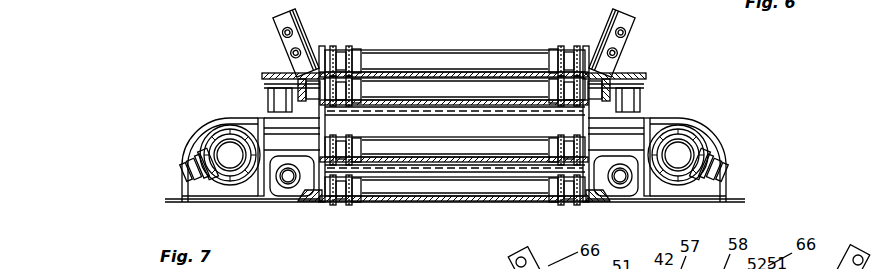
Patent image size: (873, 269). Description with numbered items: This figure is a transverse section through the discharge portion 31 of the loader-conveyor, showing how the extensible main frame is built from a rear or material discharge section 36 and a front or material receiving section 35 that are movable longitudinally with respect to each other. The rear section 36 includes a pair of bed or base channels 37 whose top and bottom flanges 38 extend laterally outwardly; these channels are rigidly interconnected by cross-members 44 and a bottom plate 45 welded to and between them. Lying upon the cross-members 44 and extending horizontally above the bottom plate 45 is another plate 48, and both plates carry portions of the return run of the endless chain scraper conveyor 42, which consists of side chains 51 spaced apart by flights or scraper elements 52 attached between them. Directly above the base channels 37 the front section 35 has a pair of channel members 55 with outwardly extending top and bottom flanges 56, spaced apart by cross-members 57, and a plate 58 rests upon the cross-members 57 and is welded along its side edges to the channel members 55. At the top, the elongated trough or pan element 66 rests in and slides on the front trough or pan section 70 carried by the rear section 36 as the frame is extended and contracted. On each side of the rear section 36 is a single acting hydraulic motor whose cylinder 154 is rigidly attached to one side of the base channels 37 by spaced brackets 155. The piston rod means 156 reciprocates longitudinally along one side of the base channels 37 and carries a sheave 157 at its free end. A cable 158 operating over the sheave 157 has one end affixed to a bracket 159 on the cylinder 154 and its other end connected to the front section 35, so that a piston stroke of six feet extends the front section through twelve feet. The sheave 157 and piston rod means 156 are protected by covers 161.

The discharge portion 31 is at (630, 53).
The front or material receiving section 35 is at (622, 78).
The rear or material discharge section 36 is at (578, 202).
The bed or base channels 37 is at (310, 201).
The top and bottom flanges 38 is at (297, 189).
The endless chain scraper conveyor 42 is at (434, 51).
The cross-members 44 is at (453, 166).
The bottom plate 45 is at (467, 199).
The plate 48 is at (419, 162).
The side chains 51 is at (372, 88).
The flights or scraper elements 52 is at (506, 186).
The channel members 55 is at (322, 122).
The top and bottom flanges 56 is at (290, 76).
The cross-members 57 is at (430, 113).
The plate 58 is at (408, 100).
The elongated trough or pan element 66 is at (303, 34).
The front trough or pan section 70 is at (630, 18).
The cylinder 154 is at (208, 131).
The brackets 155 is at (283, 194).
The piston rod means 156 is at (232, 135).
The sheave 157 is at (268, 115).
The cable 158 is at (182, 170).
The bracket 159 is at (197, 128).
The covers 161 is at (190, 142).